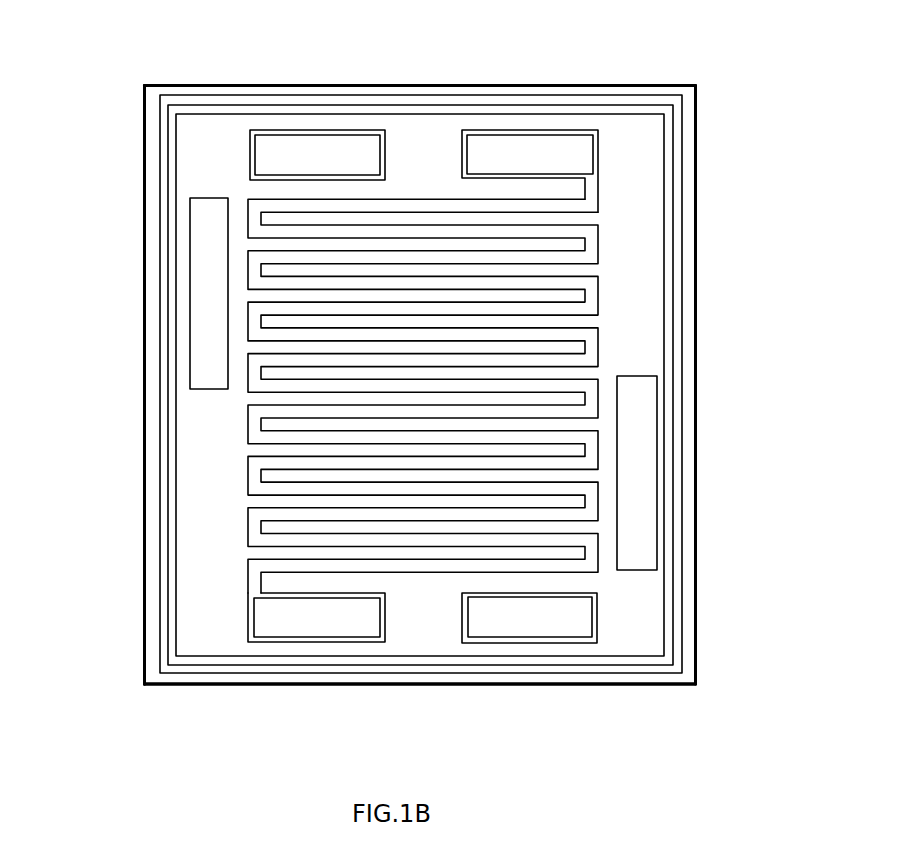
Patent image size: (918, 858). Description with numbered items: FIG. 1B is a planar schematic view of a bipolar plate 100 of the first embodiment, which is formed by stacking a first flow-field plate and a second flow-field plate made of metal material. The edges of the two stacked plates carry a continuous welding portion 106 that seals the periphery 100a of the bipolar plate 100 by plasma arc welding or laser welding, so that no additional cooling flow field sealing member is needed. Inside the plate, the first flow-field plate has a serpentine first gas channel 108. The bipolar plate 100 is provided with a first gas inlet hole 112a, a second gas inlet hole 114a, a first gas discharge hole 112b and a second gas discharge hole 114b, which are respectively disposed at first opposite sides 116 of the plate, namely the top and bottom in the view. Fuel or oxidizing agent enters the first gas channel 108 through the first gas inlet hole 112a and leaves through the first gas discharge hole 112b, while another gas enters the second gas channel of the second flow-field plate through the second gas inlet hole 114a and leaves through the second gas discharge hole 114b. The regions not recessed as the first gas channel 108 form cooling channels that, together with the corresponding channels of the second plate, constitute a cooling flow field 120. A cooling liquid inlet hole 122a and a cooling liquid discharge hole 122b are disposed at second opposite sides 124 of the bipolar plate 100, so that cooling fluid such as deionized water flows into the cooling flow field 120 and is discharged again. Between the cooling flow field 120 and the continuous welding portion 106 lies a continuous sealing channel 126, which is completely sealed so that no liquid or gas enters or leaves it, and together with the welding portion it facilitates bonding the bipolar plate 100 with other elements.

The bipolar plate 100 is at (138, 31).
The periphery 100a is at (145, 517).
The continuous welding portion 106 is at (155, 167).
The first gas channel 108 is at (588, 297).
The first gas inlet hole 112a is at (543, 135).
The first gas discharge hole 112b is at (253, 618).
The second gas inlet hole 114a is at (320, 130).
The second gas discharge hole 114b is at (595, 617).
The first opposite sides 116 is at (468, 69).
The cooling flow field 120 is at (642, 235).
The cooling liquid inlet hole 122a is at (190, 320).
The cooling liquid discharge hole 122b is at (638, 572).
The second opposite sides 124 is at (128, 386).
The continuous sealing channel 126 is at (412, 100).